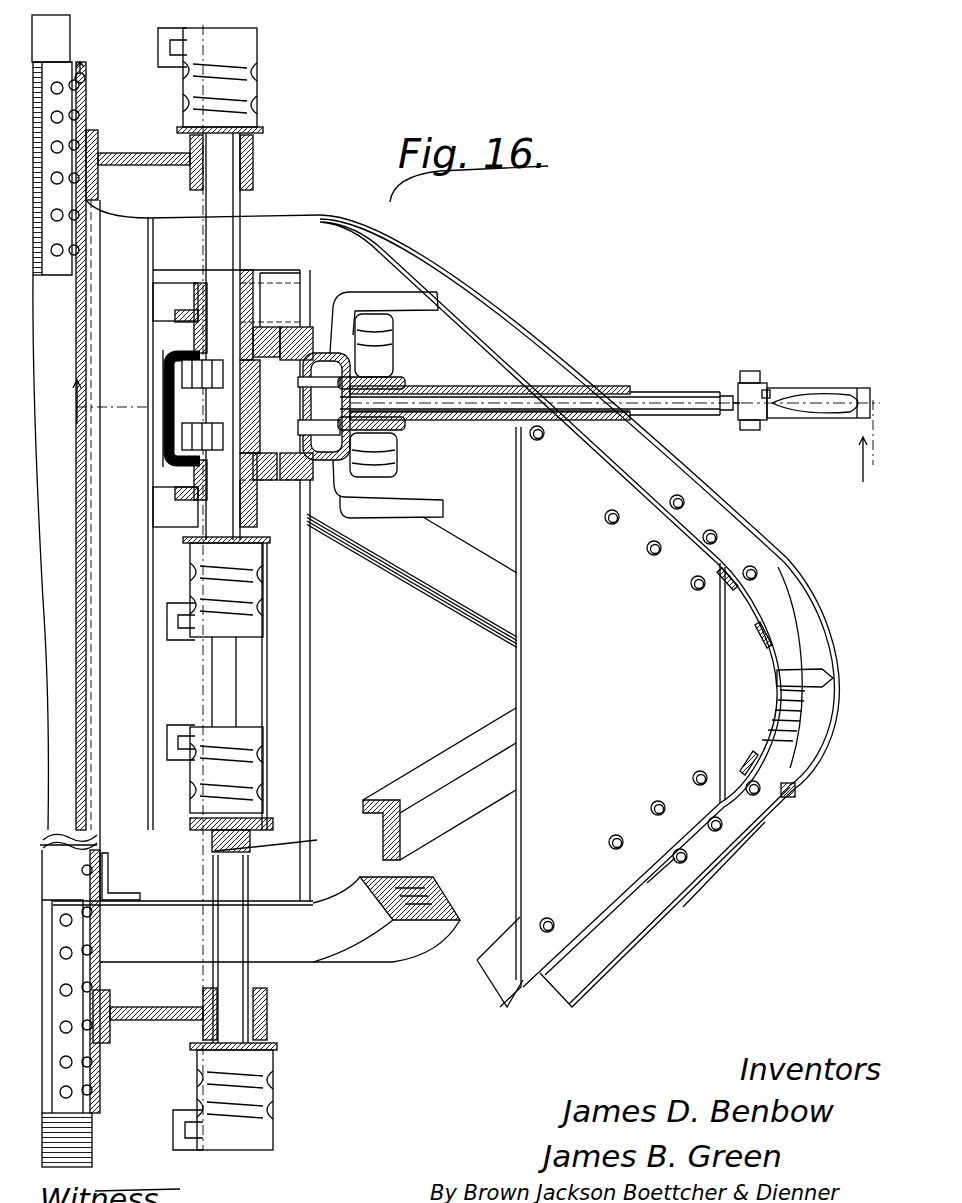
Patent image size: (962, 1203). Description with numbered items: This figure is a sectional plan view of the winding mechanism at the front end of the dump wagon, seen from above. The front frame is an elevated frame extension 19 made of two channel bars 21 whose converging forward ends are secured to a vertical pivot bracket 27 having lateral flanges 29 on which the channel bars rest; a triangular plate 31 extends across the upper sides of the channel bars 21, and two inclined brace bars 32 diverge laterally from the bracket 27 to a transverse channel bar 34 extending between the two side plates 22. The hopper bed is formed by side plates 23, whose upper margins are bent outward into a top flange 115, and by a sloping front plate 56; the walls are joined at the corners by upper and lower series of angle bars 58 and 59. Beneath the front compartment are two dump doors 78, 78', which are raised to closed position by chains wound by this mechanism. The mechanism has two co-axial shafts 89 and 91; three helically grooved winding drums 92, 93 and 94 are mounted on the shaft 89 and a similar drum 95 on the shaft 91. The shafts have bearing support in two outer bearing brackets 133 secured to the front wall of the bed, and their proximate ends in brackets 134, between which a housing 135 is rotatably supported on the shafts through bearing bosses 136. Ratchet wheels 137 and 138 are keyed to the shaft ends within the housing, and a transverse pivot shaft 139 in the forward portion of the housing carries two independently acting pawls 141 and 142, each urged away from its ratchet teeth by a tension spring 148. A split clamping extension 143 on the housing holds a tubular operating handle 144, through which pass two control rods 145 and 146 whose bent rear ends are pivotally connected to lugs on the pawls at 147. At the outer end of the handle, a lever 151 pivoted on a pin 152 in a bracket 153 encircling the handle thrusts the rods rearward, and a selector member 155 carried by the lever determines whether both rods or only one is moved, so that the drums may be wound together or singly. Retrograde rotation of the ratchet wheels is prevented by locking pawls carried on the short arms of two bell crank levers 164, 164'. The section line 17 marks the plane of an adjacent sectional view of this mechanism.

The section line 17- 17 is at (459, 431).
The elevated frame extension 19 is at (680, 925).
The channel bars 21 is at (508, 328).
The plates 22 is at (275, 270).
The plates 23 is at (46, 83).
The vertical pivot bracket 27 is at (790, 621).
The lateral flanges 29 is at (753, 564).
The triangular plate 31 is at (517, 671).
The inclined brace bars 32 is at (473, 621).
The transverse channel bar 34 is at (306, 843).
The sloping plate 56 is at (88, 126).
The angle bars 58 is at (86, 74).
The angle bars 59 is at (65, 290).
The door 78 is at (63, 838).
The door 78' is at (82, 552).
The shaft 89 is at (238, 690).
The shaft 91 is at (242, 208).
The winding drum 92 is at (273, 1146).
The winding drum 93 is at (260, 766).
The winding drum 94 is at (226, 616).
The winding drum 95 is at (260, 82).
The top flange 115 is at (70, 38).
The outer bearing brackets 133 is at (188, 173).
The brackets 134 is at (158, 284).
The housing 135 is at (165, 369).
The bearing bosses 136 is at (192, 334).
The ratchet wheel 137 is at (163, 440).
The ratchet wheel 138 is at (192, 378).
The transverse pivot shaft 139 is at (278, 378).
The pawl 141 is at (312, 540).
The pawl 142 is at (320, 343).
The split clamping extension 143 is at (403, 378).
The tubular operating lever or handle 144 is at (647, 379).
The control rod 145 is at (490, 412).
The control rod 146 is at (490, 380).
The pivotal connection 147 is at (370, 384).
The tension spring 148 is at (368, 354).
The lever 151 is at (830, 397).
The pivot pin 152 is at (752, 368).
The bracket 153 is at (768, 384).
The selector member 155 is at (728, 411).
The bell crank lever 164 is at (411, 496).
The bell crank lever 164' is at (418, 288).